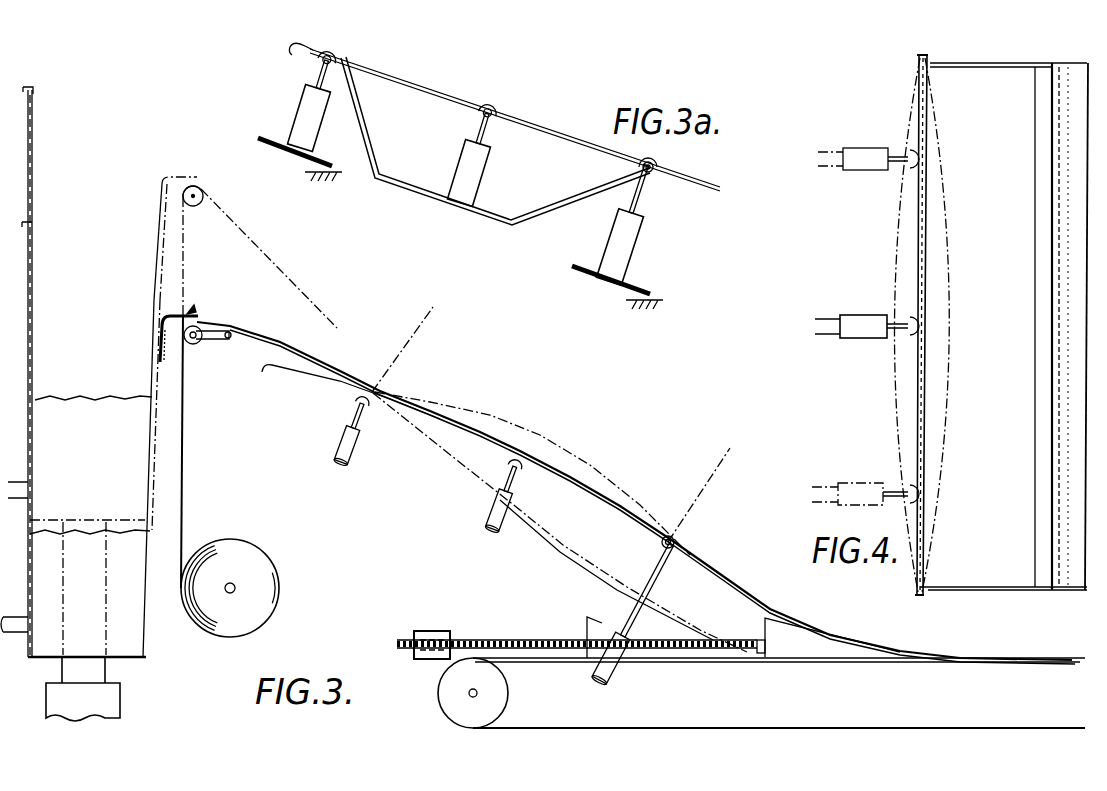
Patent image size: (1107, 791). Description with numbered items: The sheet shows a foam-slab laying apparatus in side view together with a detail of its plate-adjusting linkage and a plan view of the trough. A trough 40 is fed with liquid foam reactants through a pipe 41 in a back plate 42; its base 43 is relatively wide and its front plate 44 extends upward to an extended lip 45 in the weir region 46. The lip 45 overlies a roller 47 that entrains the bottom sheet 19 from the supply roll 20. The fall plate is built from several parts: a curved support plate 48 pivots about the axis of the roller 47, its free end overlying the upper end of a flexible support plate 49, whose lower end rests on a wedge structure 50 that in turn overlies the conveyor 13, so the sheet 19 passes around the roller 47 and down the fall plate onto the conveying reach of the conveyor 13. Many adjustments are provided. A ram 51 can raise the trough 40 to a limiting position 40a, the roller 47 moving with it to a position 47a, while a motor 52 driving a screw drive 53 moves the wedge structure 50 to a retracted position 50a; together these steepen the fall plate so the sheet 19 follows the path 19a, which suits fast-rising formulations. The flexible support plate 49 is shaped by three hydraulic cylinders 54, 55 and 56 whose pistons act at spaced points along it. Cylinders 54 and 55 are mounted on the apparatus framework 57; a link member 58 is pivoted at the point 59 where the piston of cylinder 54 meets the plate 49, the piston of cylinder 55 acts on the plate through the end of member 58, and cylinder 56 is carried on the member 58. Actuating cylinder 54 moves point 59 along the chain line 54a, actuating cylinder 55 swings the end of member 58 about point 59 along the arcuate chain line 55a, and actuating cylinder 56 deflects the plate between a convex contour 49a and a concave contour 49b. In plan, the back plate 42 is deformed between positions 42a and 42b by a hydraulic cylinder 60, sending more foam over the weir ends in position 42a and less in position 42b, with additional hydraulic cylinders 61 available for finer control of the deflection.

In FIG. 3, the conveyor 13 is at (582, 728).
In FIG. 3, the sheet 19 is at (185, 457).
In FIG. 3, the path 19a is at (292, 257).
In FIG. 3, the supply roll 20 is at (247, 558).
In FIG. 3, the trough 40 is at (143, 577).
In FIG. 4, the trough 40 is at (1010, 400).
In FIG. 3, the limiting position 40a is at (160, 254).
In FIG. 3, the pipe 41 is at (20, 614).
In FIG. 3, the back plate 42 is at (33, 352).
In FIG. 4, the back plate 42 is at (928, 259).
In FIG. 4, the back plate position 42a is at (950, 331).
In FIG. 4, the back plate position 42b is at (896, 396).
In FIG. 3, the base 43 is at (133, 660).
In FIG. 3, the front plate 44 is at (157, 366).
In FIG. 4, the front plate 44 is at (1036, 327).
In FIG. 3, the lip 45 is at (200, 315).
In FIG. 4, the lip 45 is at (1070, 248).
In FIG. 3, the weir region 46 is at (192, 310).
In FIG. 3, the roller 47 is at (196, 345).
In FIG. 3, the roller position 47a is at (201, 208).
In FIG. 3, the curved support plate 48 is at (263, 347).
In FIG. 3, the flexible support plate 49 is at (598, 486).
In FIG. 3A, the flexible support plate 49 is at (530, 118).
In FIG. 3, the convex contour 49a is at (588, 415).
In FIG. 3, the concave contour 49b is at (432, 459).
In FIG. 3, the wedge structure 50 is at (822, 652).
In FIG. 3, the retracted position 50a is at (598, 621).
In FIG. 3, the ram 51 is at (110, 706).
In FIG. 3, the motor 52 is at (430, 631).
In FIG. 3, the screw drive 53 is at (720, 627).
In FIG. 3, the hydraulic cylinder 54 is at (631, 681).
In FIG. 3A, the hydraulic cylinder 54 is at (628, 243).
In FIG. 3, the chain line 54a is at (703, 500).
In FIG. 3, the hydraulic cylinder 55 is at (342, 447).
In FIG. 3A, the hydraulic cylinder 55 is at (300, 105).
In FIG. 3, the chain line 55a is at (390, 380).
In FIG. 3, the hydraulic cylinder 56 is at (486, 507).
In FIG. 3A, the hydraulic cylinder 56 is at (480, 176).
In FIG. 3A, the apparatus framework 57 is at (258, 143).
In FIG. 3A, the link member 58 is at (365, 113).
In FIG. 3, the point 59 is at (680, 541).
In FIG. 3A, the point 59 is at (656, 165).
In FIG. 4, the hydraulic cylinder 60 is at (852, 315).
In FIG. 4, the hydraulic cylinders 61 is at (865, 143).